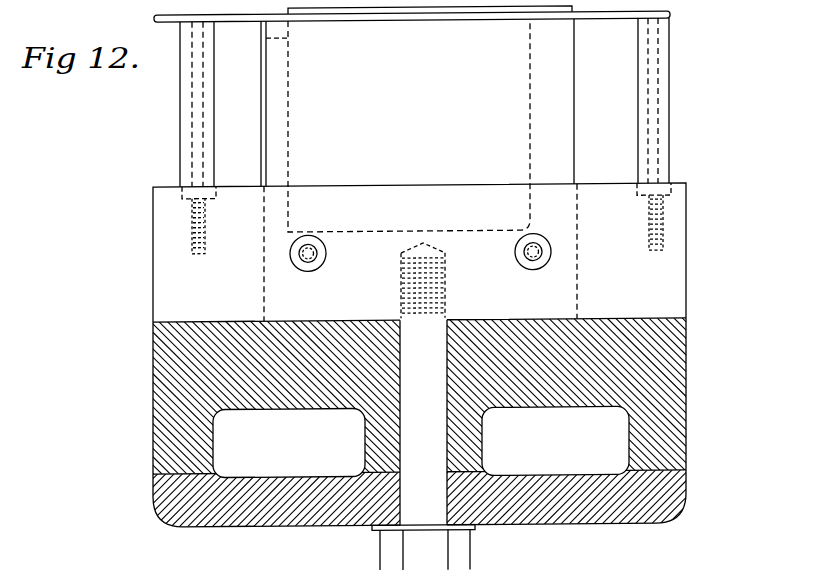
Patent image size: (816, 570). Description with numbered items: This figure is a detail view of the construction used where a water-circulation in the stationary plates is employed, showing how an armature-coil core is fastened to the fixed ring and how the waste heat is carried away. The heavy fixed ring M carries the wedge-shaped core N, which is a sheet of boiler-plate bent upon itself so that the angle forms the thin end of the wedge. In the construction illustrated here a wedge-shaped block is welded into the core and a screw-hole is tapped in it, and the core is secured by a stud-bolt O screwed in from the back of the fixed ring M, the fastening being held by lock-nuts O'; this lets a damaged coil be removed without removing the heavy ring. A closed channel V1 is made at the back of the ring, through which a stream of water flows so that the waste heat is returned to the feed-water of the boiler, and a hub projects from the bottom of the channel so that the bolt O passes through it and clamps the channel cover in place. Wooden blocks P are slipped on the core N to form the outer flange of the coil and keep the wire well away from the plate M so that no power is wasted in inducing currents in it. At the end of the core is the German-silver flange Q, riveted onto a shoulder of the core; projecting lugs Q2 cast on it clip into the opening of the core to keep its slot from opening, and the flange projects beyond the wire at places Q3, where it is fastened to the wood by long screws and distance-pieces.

The ring M is at (409, 423).
The channels V1 is at (421, 441).
The wooden blocks P is at (419, 252).
The wedge-shaped core N is at (435, 253).
The bolt O is at (423, 384).
The lock-nuts O' is at (423, 547).
The flange Q is at (412, 93).
The projecting lugs Q2 is at (289, 34).
The projecting places of flange Q3 is at (207, 13).